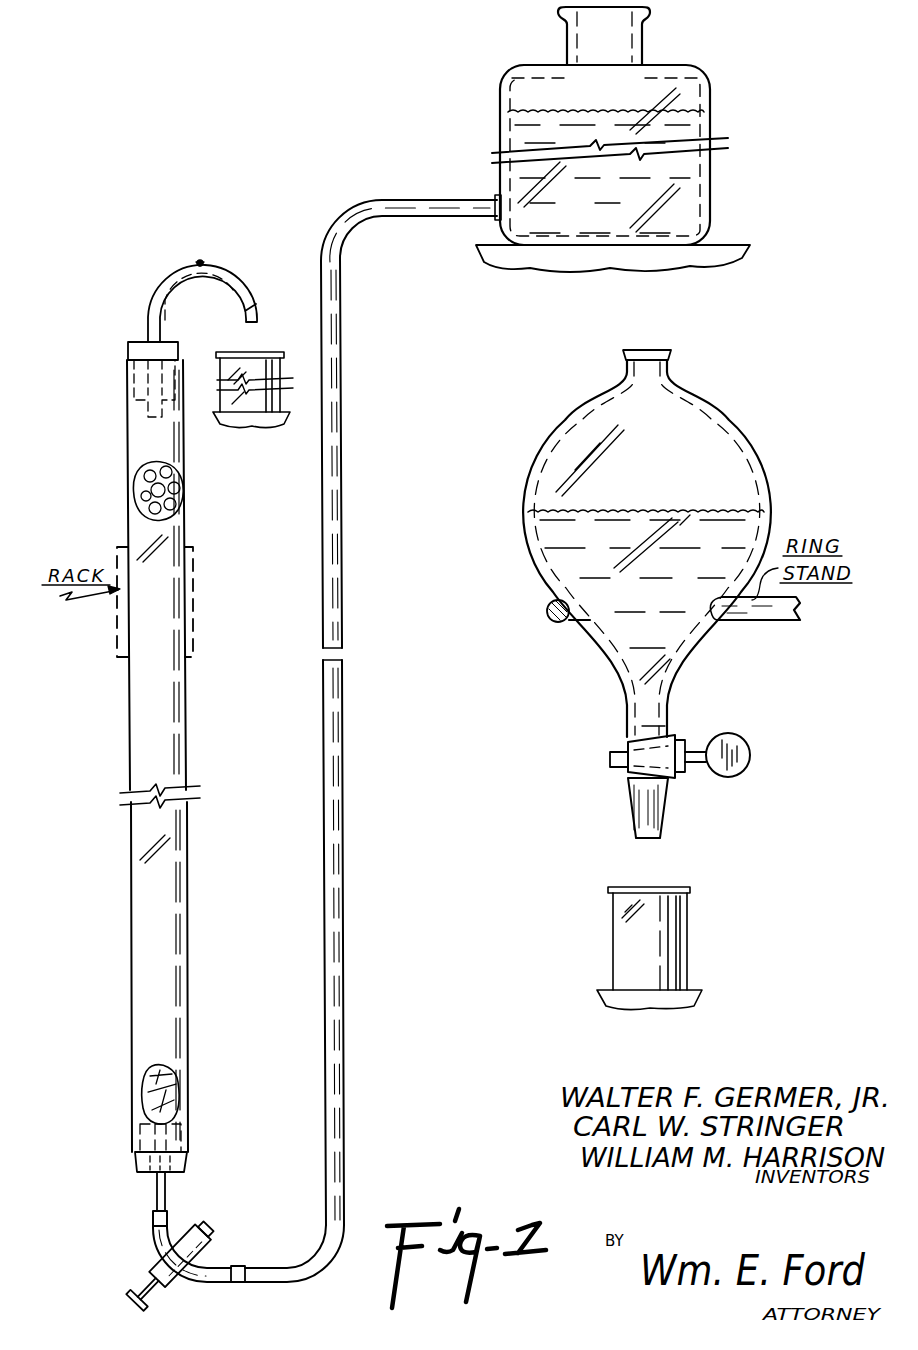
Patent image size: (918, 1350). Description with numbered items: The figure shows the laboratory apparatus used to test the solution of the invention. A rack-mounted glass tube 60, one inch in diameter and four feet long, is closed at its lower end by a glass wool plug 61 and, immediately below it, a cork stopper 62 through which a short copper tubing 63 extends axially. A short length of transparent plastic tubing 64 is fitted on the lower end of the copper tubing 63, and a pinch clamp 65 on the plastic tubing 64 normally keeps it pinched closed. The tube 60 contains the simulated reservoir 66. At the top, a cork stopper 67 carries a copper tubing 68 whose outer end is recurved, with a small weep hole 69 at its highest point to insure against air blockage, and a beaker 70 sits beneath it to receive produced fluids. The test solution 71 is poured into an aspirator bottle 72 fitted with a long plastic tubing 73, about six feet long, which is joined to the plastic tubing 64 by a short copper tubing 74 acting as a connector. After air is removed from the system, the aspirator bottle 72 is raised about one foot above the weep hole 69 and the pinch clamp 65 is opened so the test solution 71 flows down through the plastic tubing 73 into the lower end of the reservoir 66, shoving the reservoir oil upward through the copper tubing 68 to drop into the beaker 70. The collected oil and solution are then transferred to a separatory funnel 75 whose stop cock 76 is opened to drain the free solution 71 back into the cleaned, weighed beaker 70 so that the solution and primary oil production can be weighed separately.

The glass tube 60 is at (126, 714).
The glass wool plug 61 is at (150, 1098).
The cork stopper 62 is at (136, 1167).
The copper tubing 63 is at (155, 1205).
The plastic tubing 64 is at (162, 1246).
The pinch clamp 65 is at (175, 1267).
The reservoir 66 is at (140, 492).
The cork stopper 67 is at (128, 347).
The copper tubing 68 is at (158, 290).
The weep hole 69 is at (200, 263).
The beaker 70 is at (282, 372).
The test solution 71 is at (678, 140).
The aspirator bottle 72 is at (648, 52).
The plastic tubing 73 is at (346, 1042).
The copper tubing 74 is at (238, 1284).
The separatory funnel 75 is at (540, 445).
The stop cock 76 is at (750, 755).